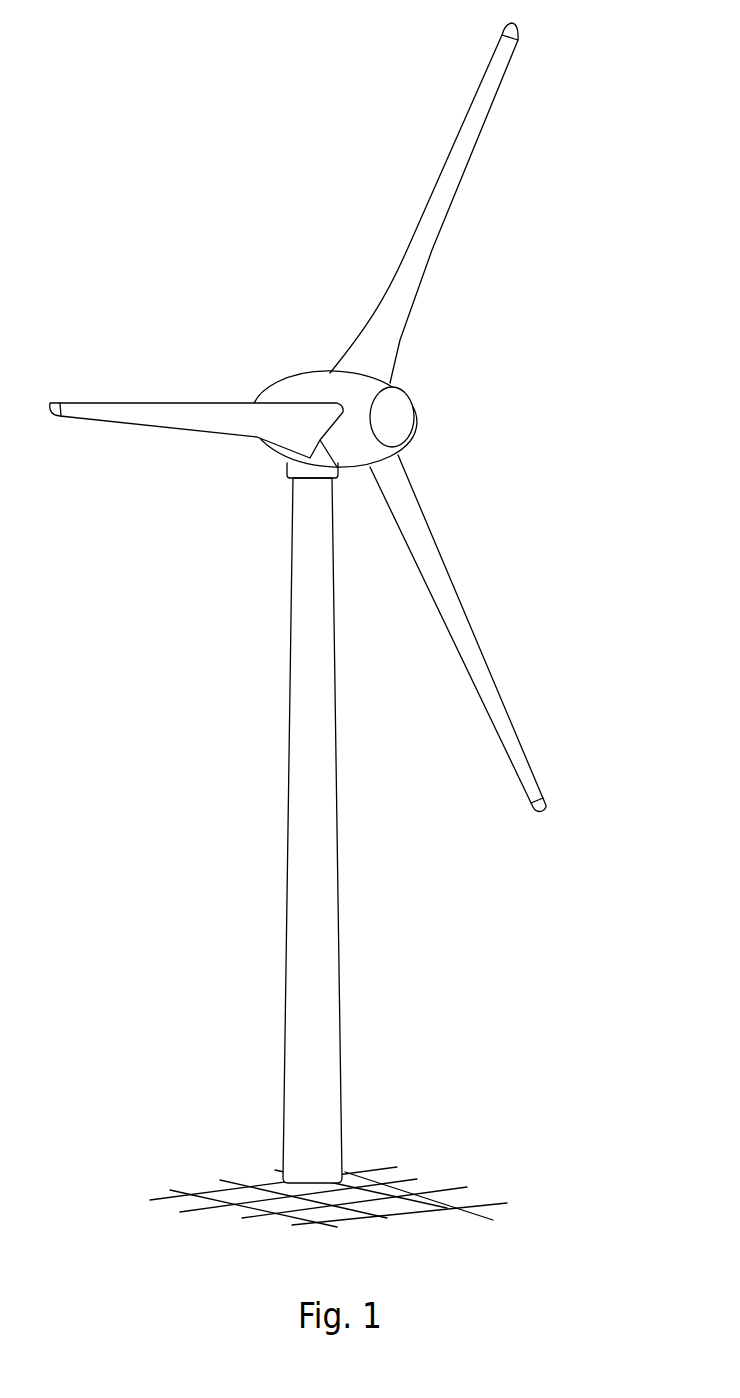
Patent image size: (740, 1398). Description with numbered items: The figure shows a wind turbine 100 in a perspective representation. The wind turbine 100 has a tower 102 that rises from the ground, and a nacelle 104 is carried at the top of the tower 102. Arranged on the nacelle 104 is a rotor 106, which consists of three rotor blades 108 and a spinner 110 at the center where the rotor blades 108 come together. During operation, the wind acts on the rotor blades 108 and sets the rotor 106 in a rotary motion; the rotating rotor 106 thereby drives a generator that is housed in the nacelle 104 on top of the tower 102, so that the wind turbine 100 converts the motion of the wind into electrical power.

The wind turbine 100 is at (347, 625).
The tower 102 is at (318, 940).
The nacelle 104 is at (305, 388).
The rotor 106 is at (347, 417).
The rotor blades 108 is at (460, 157).
The spinner 110 is at (399, 417).